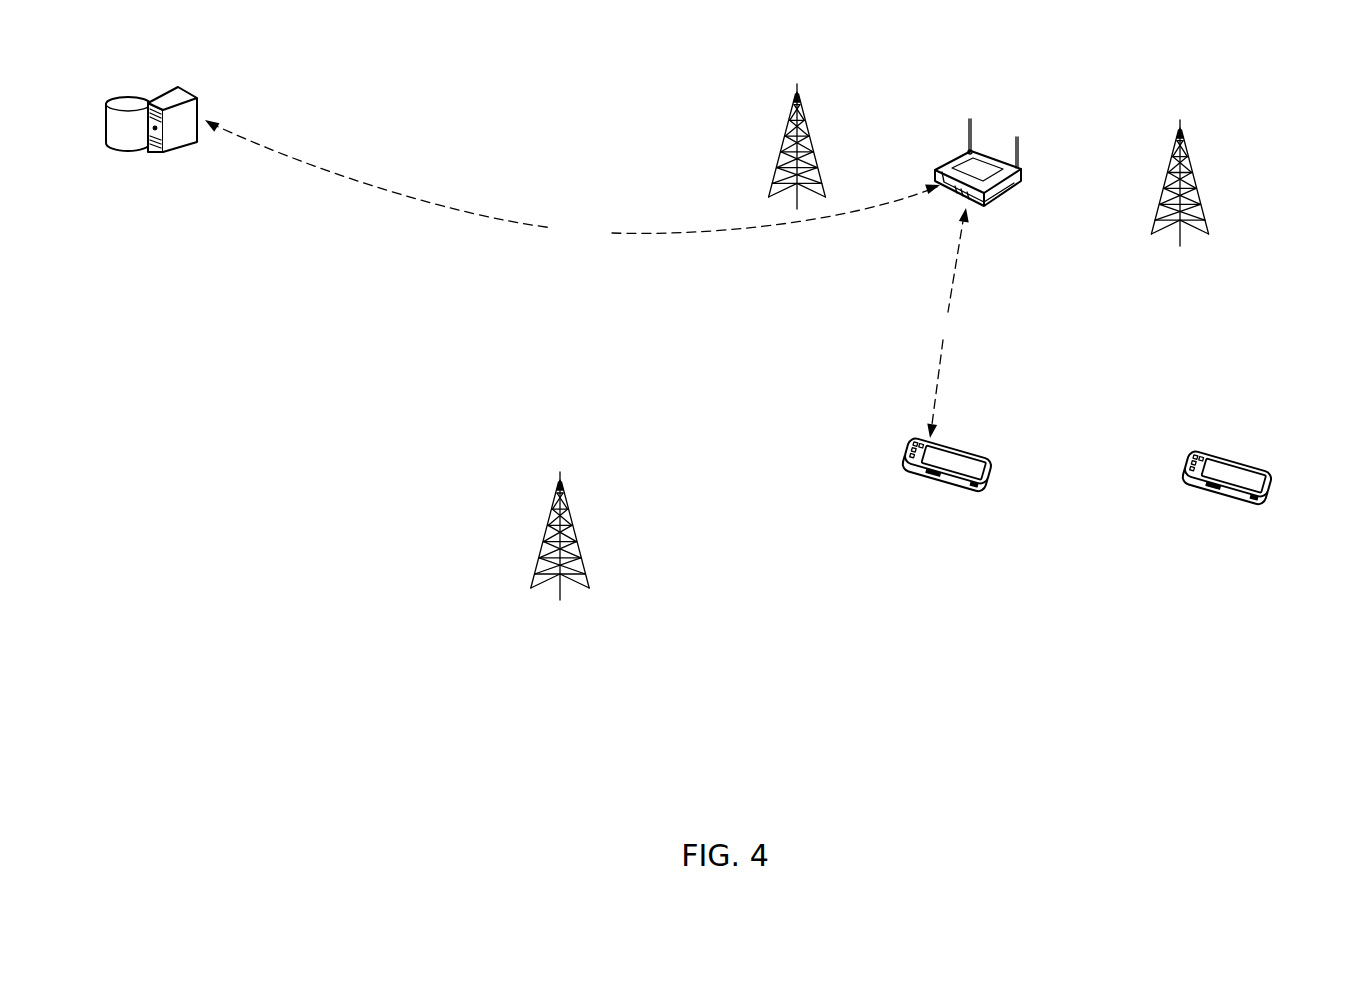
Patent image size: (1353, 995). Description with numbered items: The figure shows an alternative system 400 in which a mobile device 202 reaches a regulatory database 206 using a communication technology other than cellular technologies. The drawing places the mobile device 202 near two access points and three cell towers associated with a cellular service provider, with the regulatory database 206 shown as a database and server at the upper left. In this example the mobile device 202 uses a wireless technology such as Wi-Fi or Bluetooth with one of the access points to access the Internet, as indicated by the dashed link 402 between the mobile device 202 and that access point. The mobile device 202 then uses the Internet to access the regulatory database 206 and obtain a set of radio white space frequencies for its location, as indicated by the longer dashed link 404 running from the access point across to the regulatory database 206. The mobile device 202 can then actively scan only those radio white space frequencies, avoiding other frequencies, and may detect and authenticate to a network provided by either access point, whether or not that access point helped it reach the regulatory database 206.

The system 400 is at (724, 31).
The regulatory database 206 is at (156, 143).
The access to the regulatory database 404 is at (571, 179).
The Internet access 402 is at (948, 323).
The mobile device 202 is at (914, 478).